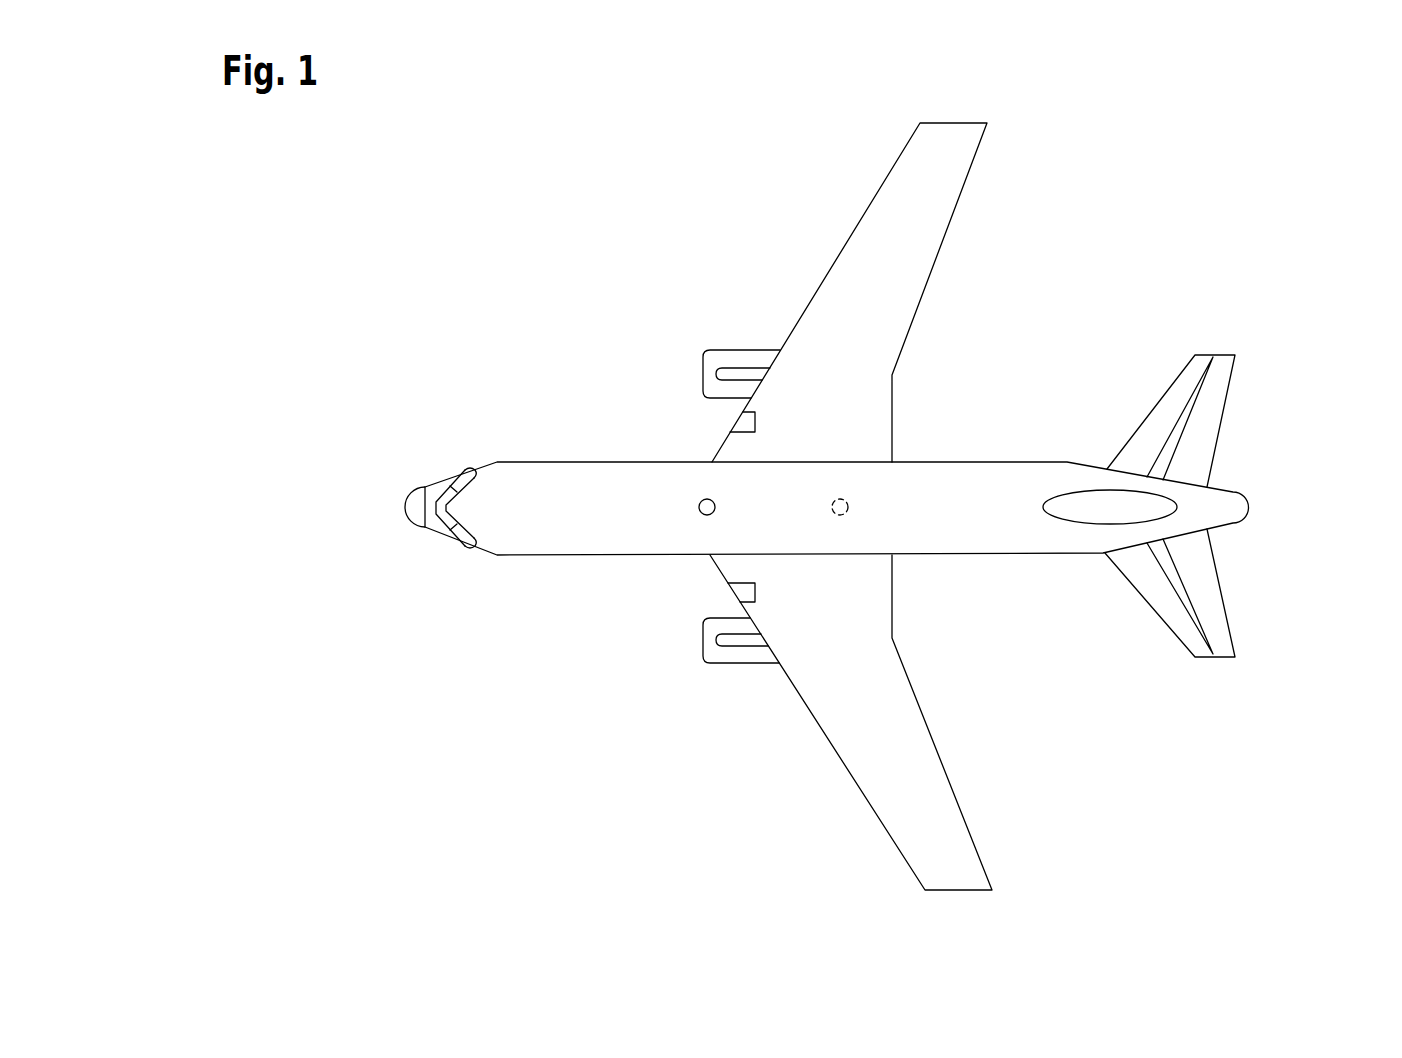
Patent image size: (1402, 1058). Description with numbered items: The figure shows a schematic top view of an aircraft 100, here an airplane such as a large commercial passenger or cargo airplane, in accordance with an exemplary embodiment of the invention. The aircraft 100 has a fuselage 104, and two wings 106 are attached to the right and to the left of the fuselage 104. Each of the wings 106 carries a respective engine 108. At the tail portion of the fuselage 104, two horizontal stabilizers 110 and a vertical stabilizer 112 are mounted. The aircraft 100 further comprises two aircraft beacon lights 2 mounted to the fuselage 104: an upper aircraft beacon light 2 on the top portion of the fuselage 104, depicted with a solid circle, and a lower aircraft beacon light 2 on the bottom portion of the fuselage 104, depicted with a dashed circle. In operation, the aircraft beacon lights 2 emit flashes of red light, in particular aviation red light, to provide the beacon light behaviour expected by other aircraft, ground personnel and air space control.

The aircraft 100 is at (1122, 212).
The fuselage 104 is at (967, 554).
The wings 106 is at (873, 230).
The engine 108 is at (690, 360).
The horizontal stabilizers 110 is at (1210, 418).
The vertical stabilizer 112 is at (1077, 511).
The aircraft beacon light 2 is at (698, 507).